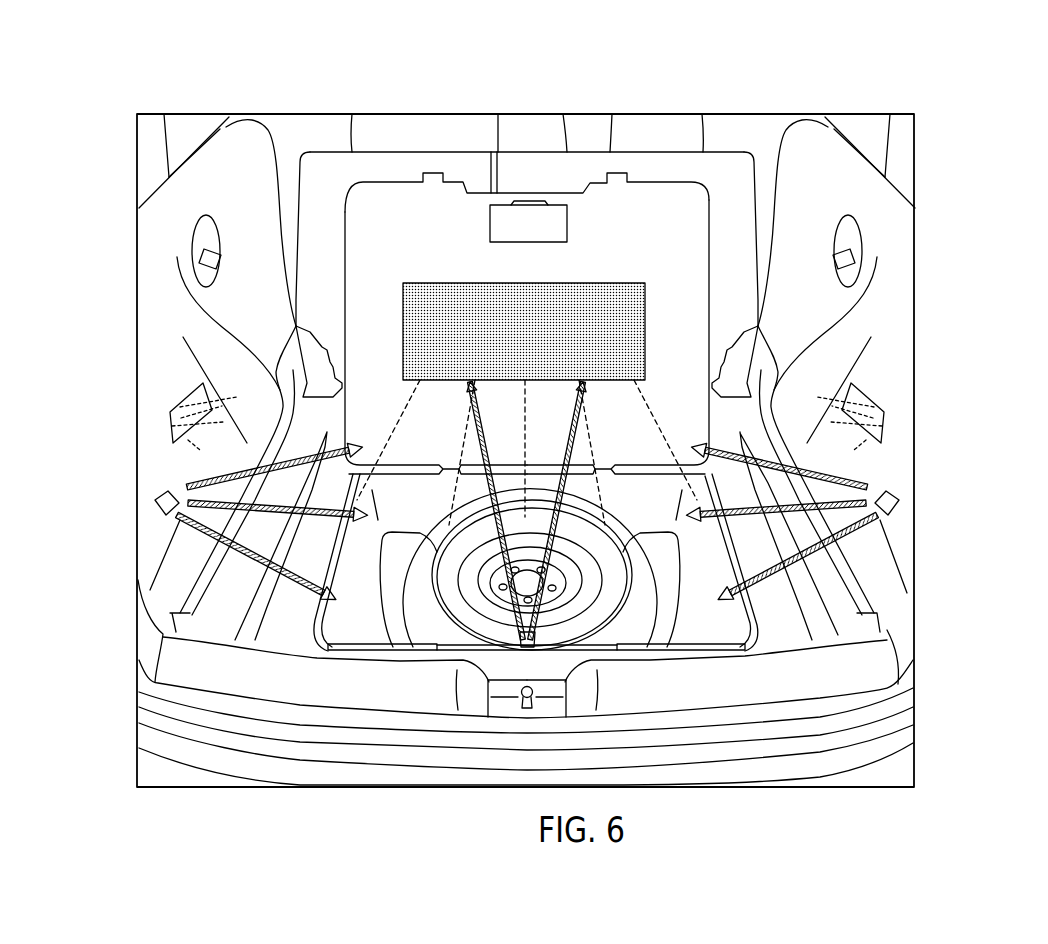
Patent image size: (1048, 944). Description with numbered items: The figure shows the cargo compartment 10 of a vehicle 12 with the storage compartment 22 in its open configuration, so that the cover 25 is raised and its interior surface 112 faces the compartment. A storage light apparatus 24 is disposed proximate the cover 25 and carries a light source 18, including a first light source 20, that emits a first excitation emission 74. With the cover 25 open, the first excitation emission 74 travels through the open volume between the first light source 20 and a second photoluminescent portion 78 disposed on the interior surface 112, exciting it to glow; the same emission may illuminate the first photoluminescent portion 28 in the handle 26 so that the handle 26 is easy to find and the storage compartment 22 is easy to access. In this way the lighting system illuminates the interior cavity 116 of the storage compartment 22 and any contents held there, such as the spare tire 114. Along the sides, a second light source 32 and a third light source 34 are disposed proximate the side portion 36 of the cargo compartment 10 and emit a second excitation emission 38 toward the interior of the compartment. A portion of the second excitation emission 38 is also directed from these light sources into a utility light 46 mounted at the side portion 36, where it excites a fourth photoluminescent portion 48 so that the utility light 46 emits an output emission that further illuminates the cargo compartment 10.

The cargo compartment 10 is at (256, 202).
The vehicle 12 is at (960, 102).
The light source 18 is at (527, 522).
The first light source 20 is at (533, 650).
The storage compartment 22 is at (357, 585).
The storage light apparatus 24 is at (672, 297).
The cover 25 is at (678, 197).
The handle 26 is at (557, 203).
The first photoluminescent portion 28 is at (529, 203).
The second light source 32 is at (897, 510).
The third light source 34 is at (156, 504).
The side portion 36 is at (233, 458).
The second excitation emission 38 is at (536, 525).
The utility light 46 is at (172, 413).
The fourth photoluminescent portion 48 is at (879, 415).
The first excitation emission 74 is at (488, 448).
The second photoluminescent portion 78 is at (548, 300).
The interior surface 112 is at (373, 230).
The spare tire 114 is at (633, 613).
The interior cavity 116 is at (536, 560).